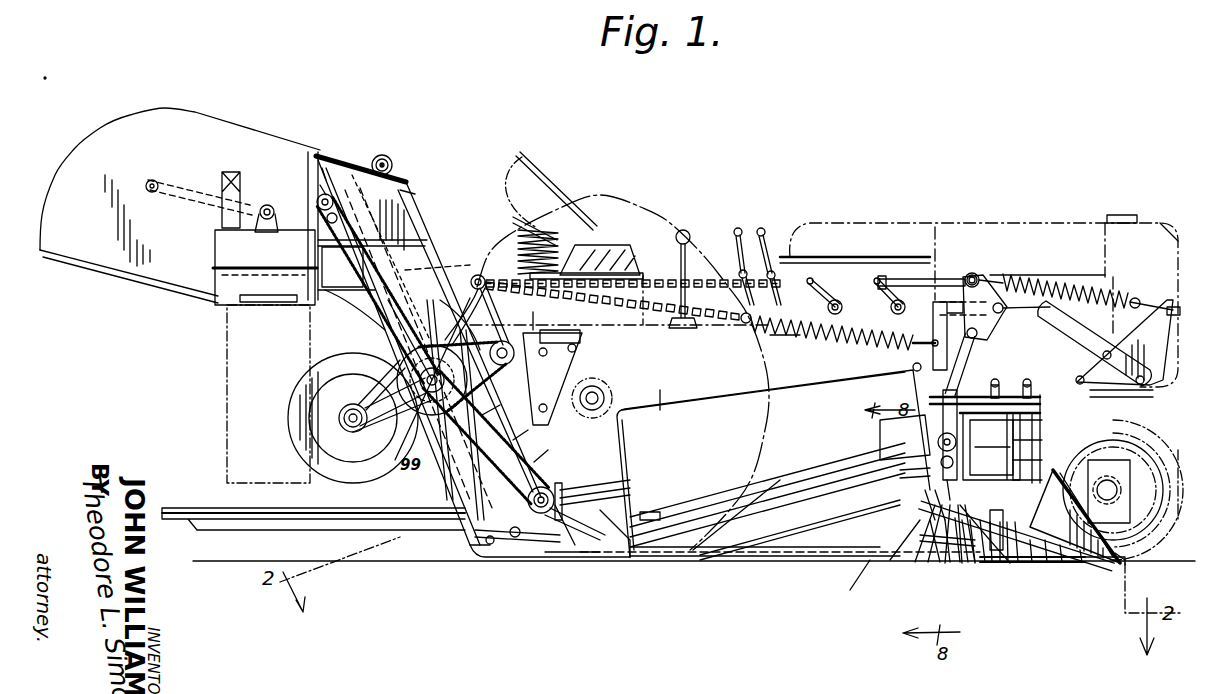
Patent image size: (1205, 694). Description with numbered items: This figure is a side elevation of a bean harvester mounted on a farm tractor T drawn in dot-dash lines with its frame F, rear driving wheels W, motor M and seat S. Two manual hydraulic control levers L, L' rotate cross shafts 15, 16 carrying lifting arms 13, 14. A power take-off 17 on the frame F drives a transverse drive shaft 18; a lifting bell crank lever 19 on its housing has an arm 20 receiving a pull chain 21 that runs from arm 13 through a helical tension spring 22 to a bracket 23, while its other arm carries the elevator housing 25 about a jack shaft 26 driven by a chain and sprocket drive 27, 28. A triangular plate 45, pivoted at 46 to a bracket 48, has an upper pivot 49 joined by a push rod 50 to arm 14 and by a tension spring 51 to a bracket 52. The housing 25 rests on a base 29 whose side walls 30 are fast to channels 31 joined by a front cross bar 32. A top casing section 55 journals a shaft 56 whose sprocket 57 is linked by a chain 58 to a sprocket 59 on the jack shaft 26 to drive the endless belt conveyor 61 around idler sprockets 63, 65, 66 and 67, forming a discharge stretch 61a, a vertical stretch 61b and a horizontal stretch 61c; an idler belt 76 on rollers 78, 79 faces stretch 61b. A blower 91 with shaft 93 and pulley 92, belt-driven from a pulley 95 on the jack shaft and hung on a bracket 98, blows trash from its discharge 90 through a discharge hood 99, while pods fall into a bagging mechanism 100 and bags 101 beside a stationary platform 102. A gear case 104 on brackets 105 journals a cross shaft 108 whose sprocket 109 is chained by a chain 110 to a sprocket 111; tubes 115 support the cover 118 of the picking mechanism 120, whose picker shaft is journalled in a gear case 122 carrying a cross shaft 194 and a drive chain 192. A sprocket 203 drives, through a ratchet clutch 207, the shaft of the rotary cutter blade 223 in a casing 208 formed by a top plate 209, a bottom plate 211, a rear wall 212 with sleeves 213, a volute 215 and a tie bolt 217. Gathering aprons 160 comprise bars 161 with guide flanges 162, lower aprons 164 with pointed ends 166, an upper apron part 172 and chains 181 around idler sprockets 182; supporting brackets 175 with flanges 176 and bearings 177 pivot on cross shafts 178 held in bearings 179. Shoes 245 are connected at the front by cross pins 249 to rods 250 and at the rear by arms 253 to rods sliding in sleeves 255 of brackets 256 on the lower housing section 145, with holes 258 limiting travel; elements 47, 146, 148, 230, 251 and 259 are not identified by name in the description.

The hood 99 is at (180, 205).
The housing 100 is at (265, 267).
The shield 101 is at (228, 366).
The platform plate 102 is at (180, 510).
The frame 61 is at (757, 552).
The sprocket 61a is at (375, 200).
The frame member 61b is at (437, 253).
The frame member 61c is at (852, 588).
The top bar 55 is at (325, 148).
The bracket 57 is at (320, 178).
The bracket 56 is at (318, 192).
The pin 58 is at (327, 216).
The roller 63 is at (375, 160).
The roller pin 79 is at (388, 160).
The bar 76 is at (398, 178).
The member 67 is at (414, 193).
The pivot 19 is at (483, 267).
The link 29 is at (470, 280).
The link 20 is at (494, 280).
The chain 21 is at (670, 278).
The chain 28 is at (612, 301).
The sprocket 27 is at (520, 345).
The drive sprocket 59 is at (410, 378).
The chain 26 is at (470, 396).
The chain run 111 is at (504, 414).
The chain run 110 is at (530, 431).
The idler 109 is at (549, 453).
The sprocket 108 is at (560, 478).
The bar 104 is at (585, 490).
The plate 18 is at (525, 385).
The shaft 17 is at (598, 378).
The wheel 91 is at (290, 425).
The hub 93 is at (350, 430).
The arm 92 is at (362, 426).
The arm 95 is at (367, 381).
The arm 98 is at (378, 406).
The guard 90 is at (330, 320).
The bar 25 is at (447, 497).
The bar 78 is at (470, 478).
The corner 65 is at (490, 556).
The bracket 66 is at (510, 542).
The support 105 is at (568, 555).
The base 30 is at (550, 552).
The member 31 is at (618, 555).
The housing 115 is at (640, 478).
The edge 120 is at (671, 395).
The top wall 118 is at (708, 412).
The conveyor 148 is at (665, 512).
The conveyor member 146 is at (790, 490).
The conveyor member 145 is at (818, 500).
The tank T is at (905, 218).
The motor M is at (1050, 223).
The lever L is at (738, 254).
The lever L' is at (773, 254).
The lever S is at (551, 202).
The wheel outline W is at (642, 240).
The frame F is at (742, 325).
The link 13 is at (835, 298).
The link 14 is at (878, 280).
The pivot 15 is at (828, 305).
The pivot 16 is at (891, 306).
The rod 50 is at (950, 275).
The pivot 49 is at (978, 272).
The spring 51 is at (1065, 285).
The bracket 48 is at (945, 305).
The spring 22 is at (838, 337).
The rod 23 is at (912, 347).
The plate 45 is at (1000, 320).
The link 46 is at (1020, 312).
The link 47 is at (975, 370).
The lever 52 is at (1124, 348).
The bolt 209 is at (1040, 389).
The bolt 207 is at (1027, 392).
The bar 217 is at (1045, 400).
The bar 208 is at (1062, 405).
The bracket 203 is at (940, 405).
The box 212 is at (991, 446).
The box 213 is at (992, 453).
The wall 215 is at (1055, 447).
The bracket 211 is at (1058, 439).
The roller 122 is at (938, 438).
The roller 192 is at (938, 458).
The housing 194 is at (880, 437).
The member 32 is at (900, 472).
The bar 223 is at (1016, 532).
The post 230 is at (930, 515).
The link 258 is at (1005, 518).
The plate 161 is at (1055, 530).
The edge 160 is at (1108, 512).
The box 177 is at (1109, 490).
The drum 179 is at (1138, 430).
The corner 181 is at (1122, 560).
The rail 182 is at (1122, 563).
The rail 249 is at (1100, 562).
The tube 175 is at (935, 560).
The tube 176 is at (945, 560).
The tube 178 is at (955, 560).
The tube 256 is at (965, 560).
The tube 259 is at (975, 560).
The tube 255 is at (982, 560).
The tube 172 is at (992, 562).
The tube 245 is at (1000, 562).
The tube 253 is at (1008, 562).
The tube 164 is at (1018, 562).
The tube 162 is at (1032, 562).
The tube 250 is at (1047, 562).
The tube 251 is at (1062, 562).
The tube 166 is at (1082, 562).